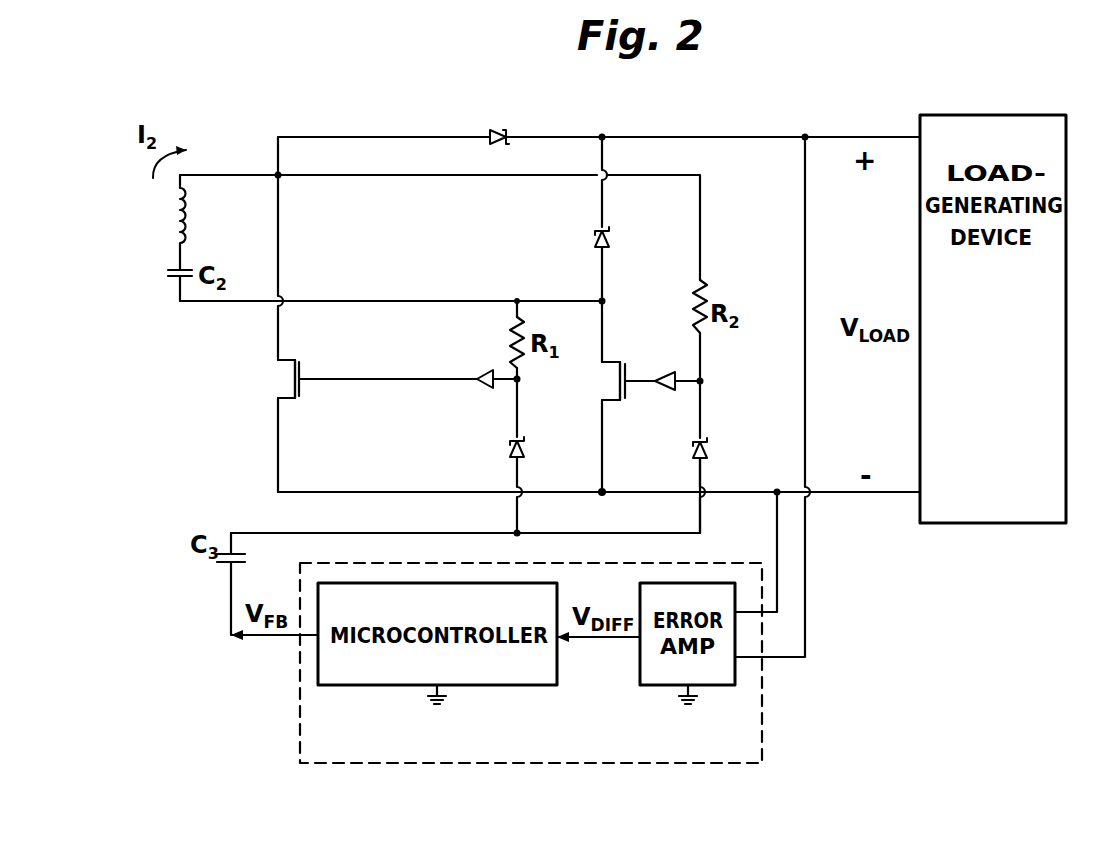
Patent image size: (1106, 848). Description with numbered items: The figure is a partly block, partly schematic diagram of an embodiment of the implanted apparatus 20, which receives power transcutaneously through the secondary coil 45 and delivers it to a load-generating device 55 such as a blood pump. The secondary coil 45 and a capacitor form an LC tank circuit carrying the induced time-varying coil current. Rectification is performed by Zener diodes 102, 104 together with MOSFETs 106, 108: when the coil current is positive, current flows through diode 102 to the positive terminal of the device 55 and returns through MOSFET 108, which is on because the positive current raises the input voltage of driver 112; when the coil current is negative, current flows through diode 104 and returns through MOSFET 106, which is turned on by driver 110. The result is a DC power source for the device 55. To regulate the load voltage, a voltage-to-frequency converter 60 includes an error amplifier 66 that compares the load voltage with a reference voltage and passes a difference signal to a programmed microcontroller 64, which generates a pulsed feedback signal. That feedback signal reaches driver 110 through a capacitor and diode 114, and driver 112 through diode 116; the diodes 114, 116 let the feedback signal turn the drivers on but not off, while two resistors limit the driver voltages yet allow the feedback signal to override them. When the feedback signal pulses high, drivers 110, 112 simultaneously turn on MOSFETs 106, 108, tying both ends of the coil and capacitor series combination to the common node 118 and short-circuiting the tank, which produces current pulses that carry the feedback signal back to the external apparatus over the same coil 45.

The implanted apparatus 20 is at (113, 662).
The secondary coil 45 is at (150, 222).
The load-generating device 55 is at (995, 115).
The voltage-to-frequency converter 60 is at (713, 765).
The microcontroller 64 is at (365, 687).
The error amplifier 66 is at (655, 687).
The Zener diode 102 is at (493, 130).
The Zener diode 104 is at (596, 236).
The MOSFET 106 is at (290, 379).
The MOSFET 108 is at (615, 381).
The driver 110 is at (490, 368).
The driver 112 is at (668, 372).
The diode 114 is at (510, 443).
The diode 116 is at (710, 445).
The common node 118 is at (605, 488).